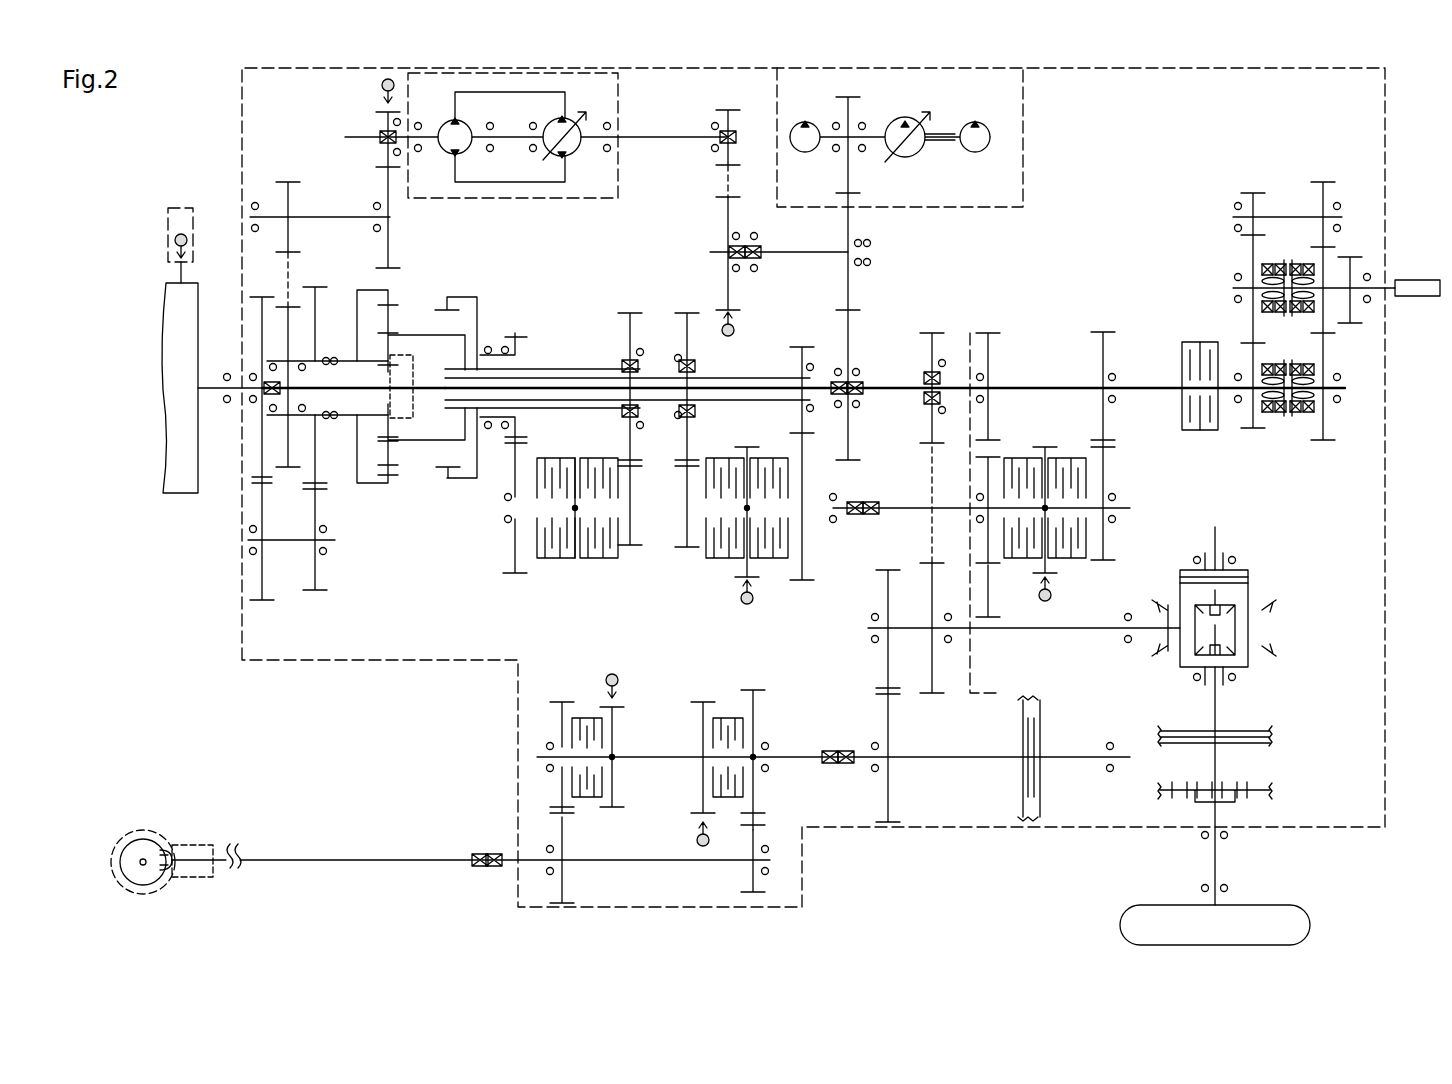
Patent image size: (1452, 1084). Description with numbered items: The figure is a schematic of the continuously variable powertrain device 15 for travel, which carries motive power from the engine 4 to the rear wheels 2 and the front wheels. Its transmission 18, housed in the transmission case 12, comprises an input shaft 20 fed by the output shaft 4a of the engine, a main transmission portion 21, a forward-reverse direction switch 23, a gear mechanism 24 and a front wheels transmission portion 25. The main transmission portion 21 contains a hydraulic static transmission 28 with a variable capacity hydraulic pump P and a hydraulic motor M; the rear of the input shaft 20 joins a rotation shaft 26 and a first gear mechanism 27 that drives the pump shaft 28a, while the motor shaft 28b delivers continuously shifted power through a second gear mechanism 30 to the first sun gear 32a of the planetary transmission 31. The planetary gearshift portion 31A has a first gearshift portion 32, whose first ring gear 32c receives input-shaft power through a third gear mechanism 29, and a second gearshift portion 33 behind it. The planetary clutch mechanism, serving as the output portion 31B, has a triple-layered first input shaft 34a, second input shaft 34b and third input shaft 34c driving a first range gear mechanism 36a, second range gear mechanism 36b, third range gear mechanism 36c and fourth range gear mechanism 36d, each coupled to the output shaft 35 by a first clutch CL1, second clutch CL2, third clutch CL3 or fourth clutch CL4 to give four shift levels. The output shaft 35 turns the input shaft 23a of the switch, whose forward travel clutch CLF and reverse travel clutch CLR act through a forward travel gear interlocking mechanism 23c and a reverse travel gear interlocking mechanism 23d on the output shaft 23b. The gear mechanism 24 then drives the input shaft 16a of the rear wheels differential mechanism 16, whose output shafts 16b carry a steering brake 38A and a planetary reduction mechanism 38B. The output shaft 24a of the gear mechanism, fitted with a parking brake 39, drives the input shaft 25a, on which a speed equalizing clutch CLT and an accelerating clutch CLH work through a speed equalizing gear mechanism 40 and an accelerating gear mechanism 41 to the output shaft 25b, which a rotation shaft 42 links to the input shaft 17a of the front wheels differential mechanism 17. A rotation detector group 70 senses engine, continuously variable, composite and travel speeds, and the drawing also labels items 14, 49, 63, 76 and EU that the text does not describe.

The rear wheels 2 is at (1318, 925).
The engine 4 is at (182, 493).
The output shaft 4a is at (210, 375).
The transmission case 12 is at (242, 75).
The PTO shaft 14 is at (1415, 280).
The powertrain device 15 is at (203, 172).
The rear wheels differential mechanism 16 is at (1308, 620).
The input shaft 16a is at (1085, 632).
The output shafts 16b is at (1215, 530).
The front wheels differential mechanism 17 is at (148, 830).
The input shaft 17a is at (195, 845).
The transmission 18 is at (430, 645).
The input shaft 20 is at (242, 375).
The main transmission portion 21 is at (408, 589).
The forward-reverse direction switch 23 is at (1084, 298).
The input shaft 23a is at (900, 506).
The output shaft 23b is at (962, 380).
The forward travel gear interlocking mechanism 23c is at (1108, 462).
The reverse travel gear interlocking mechanism 23d is at (992, 345).
The gear mechanism 24 is at (895, 349).
The output shaft 24a is at (975, 760).
The front wheels transmission portion 25 is at (649, 678).
The input shaft 25a is at (798, 755).
The output shaft 25b is at (678, 865).
The rotation shaft 26 is at (770, 408).
The first gear mechanism 27 is at (776, 244).
The hydraulic static transmission 28 is at (618, 80).
The pump shaft 28a is at (650, 140).
The motor shaft 28b is at (395, 142).
The third gear mechanism 29 is at (254, 580).
The second gear mechanism 30 is at (301, 150).
The planetary transmission 31 is at (585, 280).
The planetary gearshift portion 31A is at (438, 338).
The output portion 31B is at (660, 591).
The first gearshift portion 32 is at (373, 504).
The first sun gear 32a is at (415, 370).
The first ring gear 32c is at (383, 487).
The second gearshift portion 33 is at (467, 493).
The first input shaft 34a is at (490, 345).
The second input shaft 34b is at (602, 368).
The third input shaft 34c is at (768, 402).
The output shaft 35 is at (822, 518).
The first range gear mechanism 36a is at (515, 560).
The second range gear mechanism 36b is at (815, 552).
The third range gear mechanism 36c is at (640, 532).
The fourth range gear mechanism 36d is at (685, 488).
The steering brake 38A is at (1275, 735).
The planetary reduction mechanism 38B is at (1275, 795).
The parking brake 39 is at (1043, 768).
The speed equalizing gear mechanism 40 is at (560, 718).
The accelerating gear mechanism 41 is at (757, 805).
The rotation shaft 42 is at (345, 858).
The variable displacement pump swash plate 49 is at (567, 155).
The output transmission gear 63 is at (935, 590).
The rotation detector group 70 is at (175, 240).
The auxiliary shift output 76 is at (635, 744).
The electronic control unit EU is at (181, 208).
The hydraulic motor M is at (457, 112).
The hydraulic pump P is at (590, 156).
The first clutch CL1 is at (553, 560).
The second clutch CL2 is at (780, 560).
The third clutch CL3 is at (600, 557).
The fourth clutch CL4 is at (705, 557).
The reverse travel clutch CLR is at (1030, 458).
The forward travel clutch CLF is at (1075, 555).
The accelerating clutch CLH is at (735, 718).
The speed equalizing clutch CLT is at (582, 835).